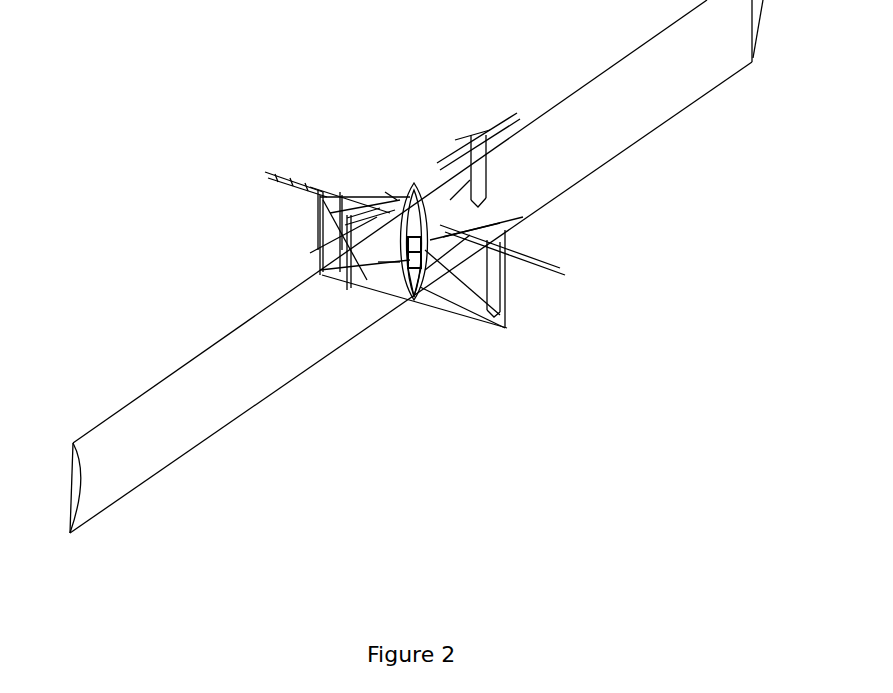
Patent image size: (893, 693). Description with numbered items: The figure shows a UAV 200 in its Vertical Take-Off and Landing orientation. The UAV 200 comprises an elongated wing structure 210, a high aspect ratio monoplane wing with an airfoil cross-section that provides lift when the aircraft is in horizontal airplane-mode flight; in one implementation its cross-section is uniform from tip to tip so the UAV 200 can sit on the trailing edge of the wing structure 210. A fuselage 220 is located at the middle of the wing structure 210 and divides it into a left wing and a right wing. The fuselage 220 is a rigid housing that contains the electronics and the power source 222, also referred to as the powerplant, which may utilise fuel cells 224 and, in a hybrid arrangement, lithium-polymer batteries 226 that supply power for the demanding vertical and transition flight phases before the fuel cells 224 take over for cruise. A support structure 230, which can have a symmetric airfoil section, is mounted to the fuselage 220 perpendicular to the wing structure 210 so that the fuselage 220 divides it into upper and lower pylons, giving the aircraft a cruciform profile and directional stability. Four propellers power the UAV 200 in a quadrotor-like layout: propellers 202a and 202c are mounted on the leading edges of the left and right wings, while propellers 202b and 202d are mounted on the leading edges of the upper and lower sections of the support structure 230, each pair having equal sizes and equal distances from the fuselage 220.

The UAV 200 is at (244, 97).
The wing structure 210 is at (237, 340).
The fuselage 220 is at (405, 193).
The power source 222 is at (397, 273).
The fuel cells 224 is at (422, 240).
The lithium-polymer batteries 226 is at (413, 275).
The support structure 230 is at (457, 310).
The propeller 202a is at (470, 143).
The propeller 202b is at (507, 262).
The propeller 202c is at (330, 246).
The propeller 202d is at (330, 214).